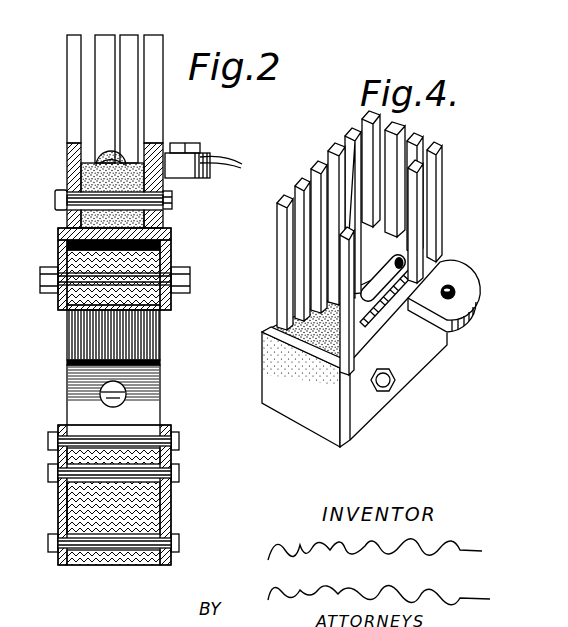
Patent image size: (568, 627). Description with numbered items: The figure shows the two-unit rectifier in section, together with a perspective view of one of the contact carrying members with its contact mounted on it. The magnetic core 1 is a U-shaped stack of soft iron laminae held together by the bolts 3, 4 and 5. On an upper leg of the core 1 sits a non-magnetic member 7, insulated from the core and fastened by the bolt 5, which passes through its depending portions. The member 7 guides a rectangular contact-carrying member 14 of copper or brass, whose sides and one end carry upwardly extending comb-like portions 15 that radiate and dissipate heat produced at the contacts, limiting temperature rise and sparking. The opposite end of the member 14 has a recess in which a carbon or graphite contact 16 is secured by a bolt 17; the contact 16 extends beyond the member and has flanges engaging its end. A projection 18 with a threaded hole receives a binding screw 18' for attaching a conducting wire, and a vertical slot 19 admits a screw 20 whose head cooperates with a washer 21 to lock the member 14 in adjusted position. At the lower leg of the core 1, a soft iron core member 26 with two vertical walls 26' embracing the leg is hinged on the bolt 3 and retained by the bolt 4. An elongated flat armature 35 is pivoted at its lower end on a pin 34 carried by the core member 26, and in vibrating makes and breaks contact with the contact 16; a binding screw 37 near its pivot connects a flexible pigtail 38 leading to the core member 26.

In FIG. 2, the magnetic core 1 is at (148, 342).
In FIG. 2, the bolt 3 is at (58, 546).
In FIG. 2, the bolt 4 is at (56, 472).
In FIG. 2, the bolt 5 is at (63, 208).
In FIG. 2, the member 7 is at (86, 233).
In FIG. 2, the contact-carrying member 14 is at (85, 177).
In FIG. 4, the contact-carrying member 14 is at (354, 358).
In FIG. 2, the comb-like portion 15 is at (124, 35).
In FIG. 4, the comb-like portion 15 is at (437, 146).
In FIG. 2, the contact 16 is at (62, 193).
In FIG. 4, the contact 16 is at (304, 412).
In FIG. 4, the bolt 17 is at (386, 383).
In FIG. 2, the projection 18 is at (204, 177).
In FIG. 4, the projection 18 is at (448, 289).
In FIG. 2, the binding screw 18' is at (200, 135).
In FIG. 4, the slot 19 is at (376, 283).
In FIG. 2, the screw 20 is at (104, 155).
In FIG. 2, the washer 21 is at (130, 165).
In FIG. 2, the core member 26 is at (132, 495).
In FIG. 2, the vertically extending wall 26' is at (38, 508).
In FIG. 2, the pin 34 is at (56, 437).
In FIG. 2, the armature 35 is at (153, 388).
In FIG. 2, the binding screw 37 is at (108, 401).
In FIG. 2, the pigtail 38 is at (118, 401).